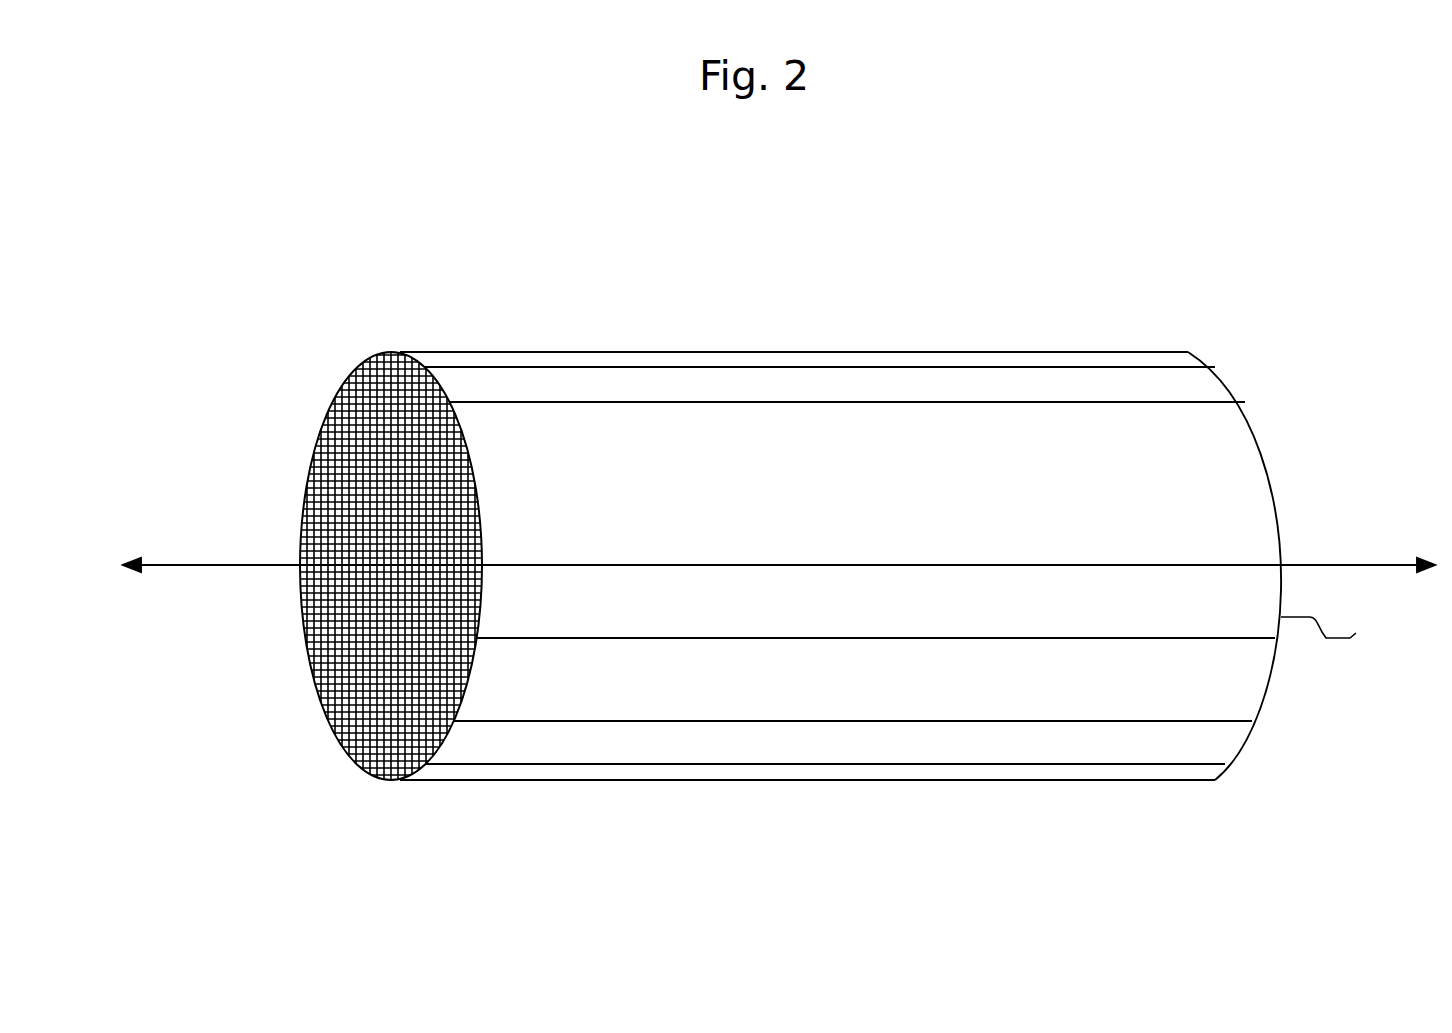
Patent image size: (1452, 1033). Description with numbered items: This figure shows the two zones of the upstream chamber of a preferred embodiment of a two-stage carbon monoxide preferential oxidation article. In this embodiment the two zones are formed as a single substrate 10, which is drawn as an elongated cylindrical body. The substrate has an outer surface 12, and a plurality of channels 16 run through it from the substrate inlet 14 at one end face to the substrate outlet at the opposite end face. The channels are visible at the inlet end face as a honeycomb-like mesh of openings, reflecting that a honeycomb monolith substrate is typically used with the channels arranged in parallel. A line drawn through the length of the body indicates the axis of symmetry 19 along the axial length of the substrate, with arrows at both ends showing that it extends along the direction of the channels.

The substrate 10 is at (550, 278).
The outer surface 12 is at (898, 381).
The substrate inlet 14 is at (318, 441).
The channels 16 is at (320, 522).
The longitudinal axis 19 is at (1385, 565).